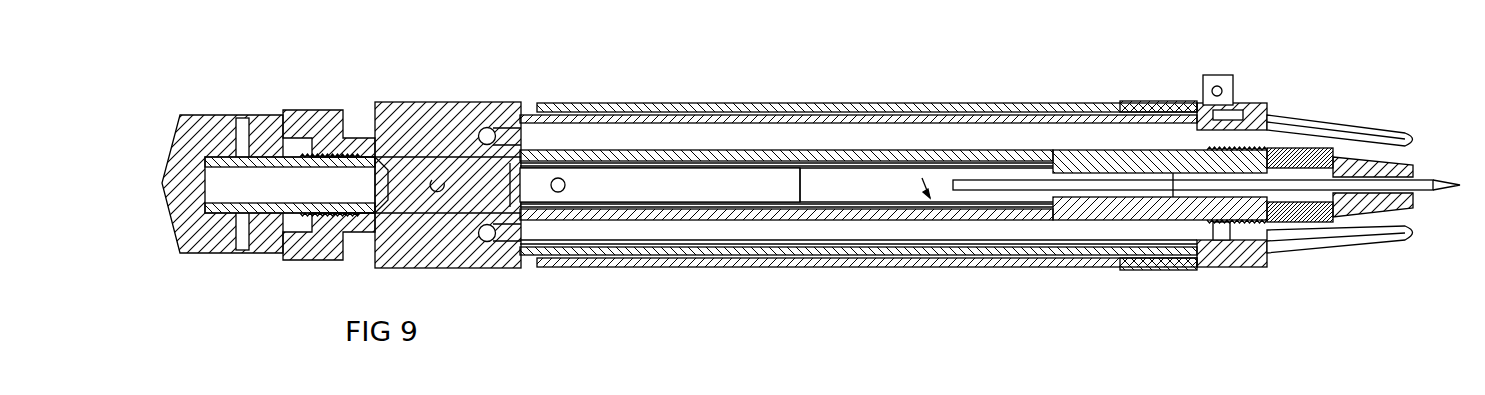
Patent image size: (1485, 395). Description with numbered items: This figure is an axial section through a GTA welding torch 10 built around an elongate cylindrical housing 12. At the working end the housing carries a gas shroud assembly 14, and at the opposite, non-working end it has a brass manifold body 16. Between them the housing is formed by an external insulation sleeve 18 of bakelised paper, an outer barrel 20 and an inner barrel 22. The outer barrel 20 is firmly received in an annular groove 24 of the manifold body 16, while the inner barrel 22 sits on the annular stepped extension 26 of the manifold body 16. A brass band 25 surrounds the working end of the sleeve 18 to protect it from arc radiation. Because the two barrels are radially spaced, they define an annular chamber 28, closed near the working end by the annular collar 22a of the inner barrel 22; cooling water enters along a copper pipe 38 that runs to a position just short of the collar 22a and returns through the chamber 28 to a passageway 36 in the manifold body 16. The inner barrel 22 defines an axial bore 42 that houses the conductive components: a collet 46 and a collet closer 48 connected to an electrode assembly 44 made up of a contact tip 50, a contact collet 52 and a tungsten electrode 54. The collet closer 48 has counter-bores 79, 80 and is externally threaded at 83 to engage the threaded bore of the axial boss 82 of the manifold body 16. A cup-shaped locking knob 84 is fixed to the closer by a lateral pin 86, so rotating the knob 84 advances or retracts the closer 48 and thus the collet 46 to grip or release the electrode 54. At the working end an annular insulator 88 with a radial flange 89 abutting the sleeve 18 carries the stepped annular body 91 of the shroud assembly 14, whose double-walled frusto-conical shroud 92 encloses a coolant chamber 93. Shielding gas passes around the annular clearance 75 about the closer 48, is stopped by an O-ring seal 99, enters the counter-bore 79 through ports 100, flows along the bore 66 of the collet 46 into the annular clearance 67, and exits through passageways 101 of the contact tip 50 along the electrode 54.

The GTA welding torch 10 is at (556, 283).
The housing 12 is at (728, 102).
The gas shroud assembly 14 is at (1313, 113).
The manifold body 16 is at (423, 123).
The external insulation sleeve 18 is at (840, 107).
The outer barrel 20 is at (907, 127).
The inner barrel 22 is at (927, 157).
The annular collar 22a is at (1237, 222).
The annular groove 24 is at (520, 123).
The band 25 is at (1130, 103).
The annular stepped extension 26 is at (527, 147).
The annular chamber 28 is at (778, 133).
The passageway 36 is at (480, 133).
The pipe 38 is at (720, 240).
The axial bore 42 is at (863, 173).
The electrode assembly 44 is at (1310, 148).
The collet 46 is at (950, 193).
The collet closer 48 is at (748, 188).
The contact tip 50 is at (1317, 222).
The contact collet 52 is at (1390, 202).
The tungsten tip (electrode) 54 is at (1433, 187).
The bore 66 is at (897, 197).
The annular clearance 67 is at (870, 208).
The annular clearance 75 is at (677, 160).
The counter-bore 79 is at (773, 185).
The counter-bore 80 is at (297, 187).
The axial boss 82 is at (350, 143).
The external thread 83 is at (303, 227).
The locking knob 84 is at (197, 130).
The pin 86 is at (238, 234).
The annular insulator 88 is at (1245, 110).
The radial flange 89 is at (1207, 267).
The stepped annular body 91 is at (1253, 117).
The shroud 92 is at (1390, 127).
The annular chamber 93 is at (1382, 237).
The O-ring seal 99 is at (400, 163).
The ports 100 is at (588, 198).
The passageways 101 is at (1280, 130).